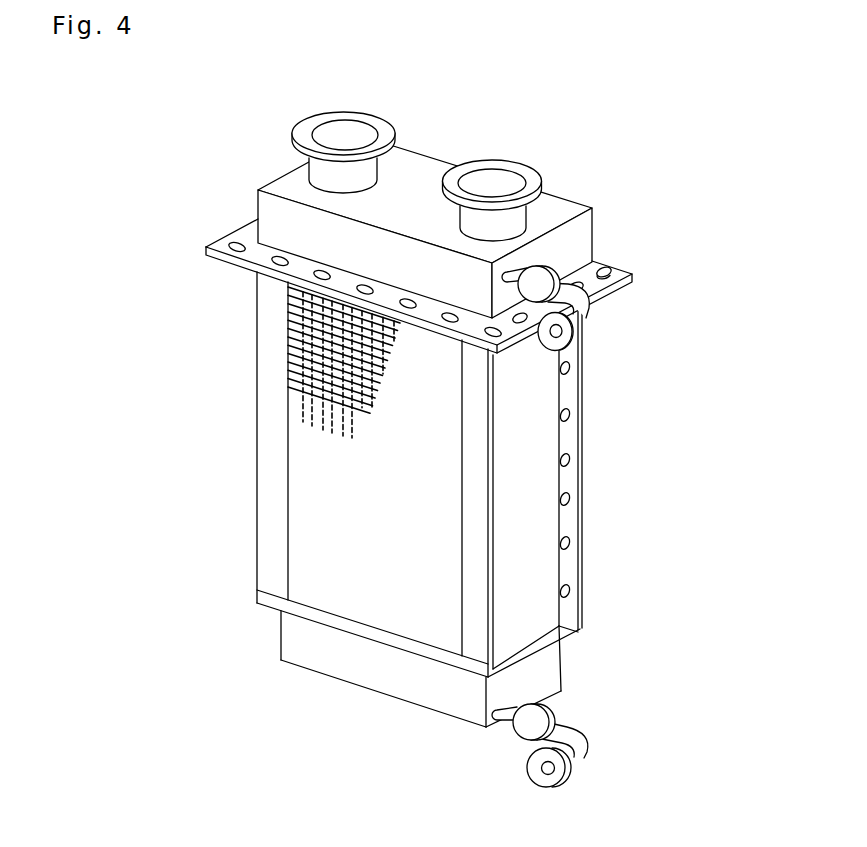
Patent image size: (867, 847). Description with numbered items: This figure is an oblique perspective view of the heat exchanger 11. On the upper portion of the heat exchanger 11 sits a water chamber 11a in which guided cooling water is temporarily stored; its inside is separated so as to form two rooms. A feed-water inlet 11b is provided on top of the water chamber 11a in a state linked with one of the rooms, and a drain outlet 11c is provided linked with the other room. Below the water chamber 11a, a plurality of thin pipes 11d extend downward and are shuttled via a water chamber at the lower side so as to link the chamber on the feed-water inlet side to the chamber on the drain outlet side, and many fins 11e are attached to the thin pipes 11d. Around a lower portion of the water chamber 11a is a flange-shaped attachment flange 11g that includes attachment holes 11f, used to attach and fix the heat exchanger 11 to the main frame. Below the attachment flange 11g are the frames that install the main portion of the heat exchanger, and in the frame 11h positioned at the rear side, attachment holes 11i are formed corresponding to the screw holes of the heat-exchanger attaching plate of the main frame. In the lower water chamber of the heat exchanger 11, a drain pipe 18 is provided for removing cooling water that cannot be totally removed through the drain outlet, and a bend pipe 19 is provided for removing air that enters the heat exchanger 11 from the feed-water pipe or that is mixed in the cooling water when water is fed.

The heat exchanger 11 is at (250, 204).
The water chamber 11a is at (288, 180).
The feed-water inlet 11b is at (348, 133).
The drain outlet 11c is at (495, 180).
The thin pipes 11d is at (303, 409).
The fins 11e is at (290, 323).
The attachment holes 11f is at (605, 266).
The attachment flange 11g is at (626, 272).
The frame 11h is at (568, 427).
The attachment holes 11i is at (570, 499).
The drain pipe 18 is at (589, 724).
The bend pipe 19 is at (585, 312).